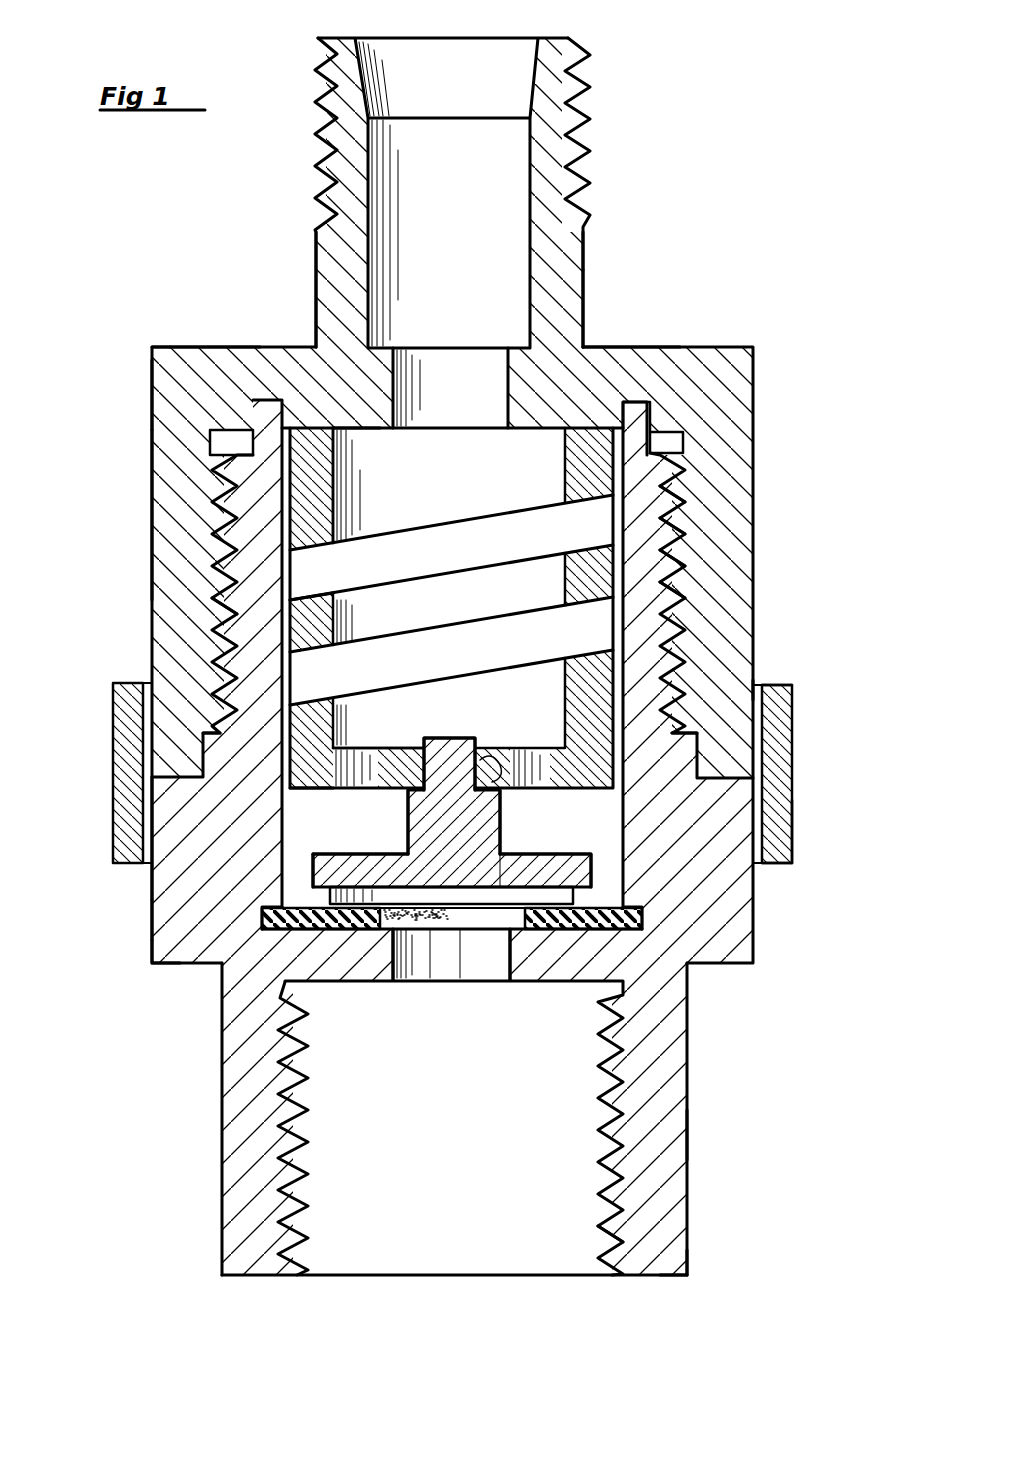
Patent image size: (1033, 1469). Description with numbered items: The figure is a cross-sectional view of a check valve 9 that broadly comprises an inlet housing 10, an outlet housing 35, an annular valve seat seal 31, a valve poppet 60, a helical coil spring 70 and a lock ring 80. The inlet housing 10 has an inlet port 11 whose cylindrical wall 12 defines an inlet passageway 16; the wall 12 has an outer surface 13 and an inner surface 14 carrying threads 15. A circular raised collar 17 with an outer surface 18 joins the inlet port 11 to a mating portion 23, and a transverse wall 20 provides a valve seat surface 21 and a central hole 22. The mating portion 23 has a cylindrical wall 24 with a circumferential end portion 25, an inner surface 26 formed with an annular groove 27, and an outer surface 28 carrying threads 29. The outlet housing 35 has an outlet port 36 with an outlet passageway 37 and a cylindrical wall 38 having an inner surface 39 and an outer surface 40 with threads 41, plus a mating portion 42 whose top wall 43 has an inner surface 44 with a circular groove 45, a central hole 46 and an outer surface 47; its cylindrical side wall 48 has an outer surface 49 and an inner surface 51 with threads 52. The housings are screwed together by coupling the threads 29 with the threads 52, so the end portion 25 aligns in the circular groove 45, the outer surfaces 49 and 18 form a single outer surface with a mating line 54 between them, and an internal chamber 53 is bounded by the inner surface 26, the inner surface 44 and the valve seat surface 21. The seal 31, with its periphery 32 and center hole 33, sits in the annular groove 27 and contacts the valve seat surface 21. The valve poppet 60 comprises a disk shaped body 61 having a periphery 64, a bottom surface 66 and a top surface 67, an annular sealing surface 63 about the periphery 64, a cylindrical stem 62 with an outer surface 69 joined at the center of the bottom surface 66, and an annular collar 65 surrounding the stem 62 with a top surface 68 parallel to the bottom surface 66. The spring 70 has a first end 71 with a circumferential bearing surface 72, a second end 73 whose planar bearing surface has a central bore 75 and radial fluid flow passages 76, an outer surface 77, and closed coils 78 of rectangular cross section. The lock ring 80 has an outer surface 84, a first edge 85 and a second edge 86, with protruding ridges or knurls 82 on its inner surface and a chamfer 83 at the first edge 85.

The check valve 9 is at (748, 142).
The inlet housing 10 is at (698, 1058).
The inlet port 11 is at (692, 1100).
The cylindrical wall 12 is at (650, 1277).
The outer surface 13 is at (693, 1135).
The inner surface 14 is at (615, 1180).
The threads 15 is at (615, 1230).
The inlet passageway 16 is at (515, 1262).
The circular raised collar 17 is at (152, 963).
The outer surface 18 is at (150, 934).
The transverse wall 20 is at (556, 985).
The valve seat surface 21 is at (430, 944).
The central hole 22 is at (448, 985).
The mating portion 23 is at (688, 452).
The cylindrical wall 24 is at (672, 493).
The circumferential end portion 25 is at (638, 400).
The inner surface 26 is at (652, 522).
The annular groove 27 is at (642, 918).
The outer surface 28 is at (672, 558).
The threads 29 is at (684, 606).
The annular valve seat seal 31 is at (442, 941).
The periphery 32 is at (262, 918).
The center hole 33 is at (488, 940).
The outlet housing 35 is at (766, 394).
The outlet port 36 is at (586, 248).
The outlet passageway 37 is at (475, 45).
The cylindrical wall 38 is at (588, 272).
The inner surface 39 is at (540, 158).
The outer surface 40 is at (317, 252).
The threads 41 is at (316, 170).
The mating portion 42 is at (150, 383).
The top wall 43 is at (600, 347).
The inner surface 44 is at (510, 436).
The circular groove 45 is at (272, 400).
The central hole 46 is at (488, 348).
The outer surface 47 is at (200, 347).
The cylindrical side wall 48 is at (160, 456).
The outer surface 49 is at (155, 512).
The inner surface 51 is at (235, 548).
The threads 52 is at (235, 597).
The internal chamber 53 is at (293, 825).
The mating line 54 is at (182, 765).
The valve poppet 60 is at (547, 848).
The disk shaped body 61 is at (503, 870).
The cylindrical stem 62 is at (462, 736).
The annular sealing surface 63 is at (313, 882).
The periphery 64 is at (591, 860).
The annular collar 65 is at (415, 808).
The bottom surface 66 is at (343, 870).
The top surface 67 is at (400, 895).
The top surface 68 is at (512, 790).
The outer surface 69 is at (487, 770).
The helical coil spring 70 is at (434, 487).
The first end 71 is at (354, 485).
The circumferential bearing surface 72 is at (372, 430).
The second end 73 is at (335, 790).
The central bore 75 is at (430, 752).
The fluid flow passages 76 is at (368, 760).
The outer surface 77 is at (292, 598).
The coils 78 is at (458, 577).
The lock ring 80 is at (805, 743).
The protruding ridges or knurls 82 is at (757, 785).
The chamfer 83 is at (757, 685).
The outer surface 84 is at (795, 830).
The first edge 85 is at (795, 682).
The second edge 86 is at (790, 866).